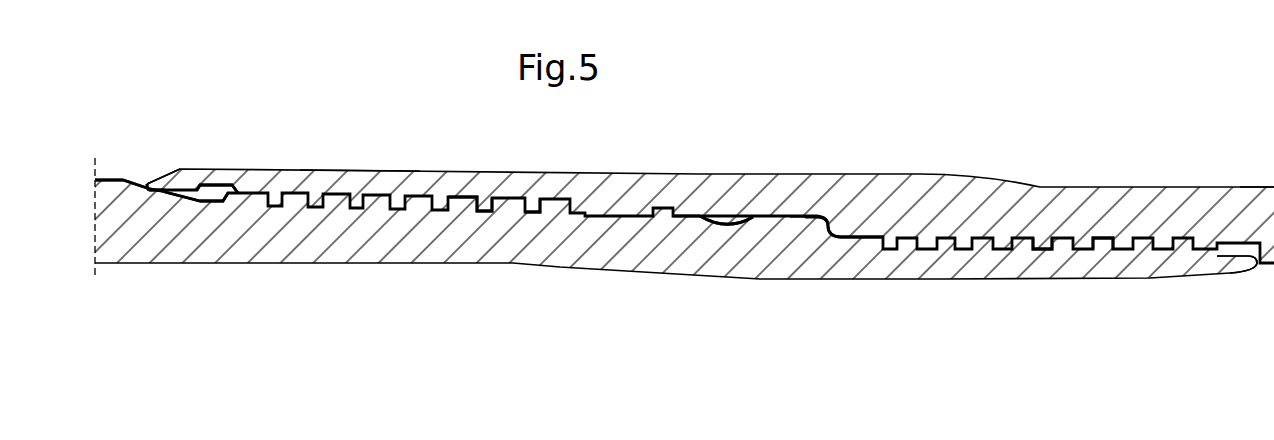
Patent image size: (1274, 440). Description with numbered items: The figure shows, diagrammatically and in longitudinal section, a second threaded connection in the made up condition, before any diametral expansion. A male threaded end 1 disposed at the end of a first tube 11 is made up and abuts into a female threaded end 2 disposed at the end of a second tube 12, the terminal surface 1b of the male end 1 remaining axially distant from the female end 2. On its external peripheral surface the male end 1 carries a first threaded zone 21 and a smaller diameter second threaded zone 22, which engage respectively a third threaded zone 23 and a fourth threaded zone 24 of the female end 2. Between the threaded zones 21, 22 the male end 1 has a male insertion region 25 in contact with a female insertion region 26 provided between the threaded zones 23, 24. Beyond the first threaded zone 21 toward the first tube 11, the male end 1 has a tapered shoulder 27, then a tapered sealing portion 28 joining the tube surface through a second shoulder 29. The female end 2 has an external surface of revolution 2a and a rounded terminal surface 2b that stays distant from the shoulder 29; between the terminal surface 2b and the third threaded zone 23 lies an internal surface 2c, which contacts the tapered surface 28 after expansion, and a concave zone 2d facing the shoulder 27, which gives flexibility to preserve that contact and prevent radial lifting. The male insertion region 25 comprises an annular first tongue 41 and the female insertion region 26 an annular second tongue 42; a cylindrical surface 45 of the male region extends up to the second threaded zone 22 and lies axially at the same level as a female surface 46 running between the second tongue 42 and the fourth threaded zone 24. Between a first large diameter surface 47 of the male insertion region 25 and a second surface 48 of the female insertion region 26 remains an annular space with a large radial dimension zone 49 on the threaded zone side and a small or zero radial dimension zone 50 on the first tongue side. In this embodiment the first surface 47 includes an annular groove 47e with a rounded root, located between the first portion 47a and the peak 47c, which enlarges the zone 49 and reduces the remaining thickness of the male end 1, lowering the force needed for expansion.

The male threaded end 1 is at (625, 265).
The terminal surface 1b is at (1253, 264).
The female threaded end 2 is at (920, 173).
The external surface of revolution 2a is at (357, 170).
The terminal surface 2b is at (142, 183).
The internal surface 2c is at (186, 200).
The concave zone 2d is at (222, 202).
The first tube 11 is at (100, 180).
The second tube 12 is at (1273, 152).
The first threaded zone 21 is at (540, 214).
The second threaded zone 22 is at (1105, 250).
The third threaded zone 23 is at (478, 207).
The fourth threaded zone 24 is at (1043, 245).
The male insertion region 25 is at (727, 267).
The female insertion region 26 is at (823, 200).
The shoulder 27 is at (220, 188).
The tapered sealing portion 28 is at (150, 186).
The second shoulder 29 is at (128, 182).
The first tongue 41 is at (807, 228).
The second tongue 42 is at (840, 233).
The cylindrical surface 45 is at (867, 233).
The surface 46 is at (855, 240).
The first large diameter surface 47 is at (747, 217).
The first portion 47a is at (688, 214).
The peak 47c is at (768, 216).
The annular groove 47e is at (714, 220).
The second surface 48 is at (705, 230).
The large radial dimension zone 49 is at (730, 222).
The small radial dimension zone 50 is at (795, 217).